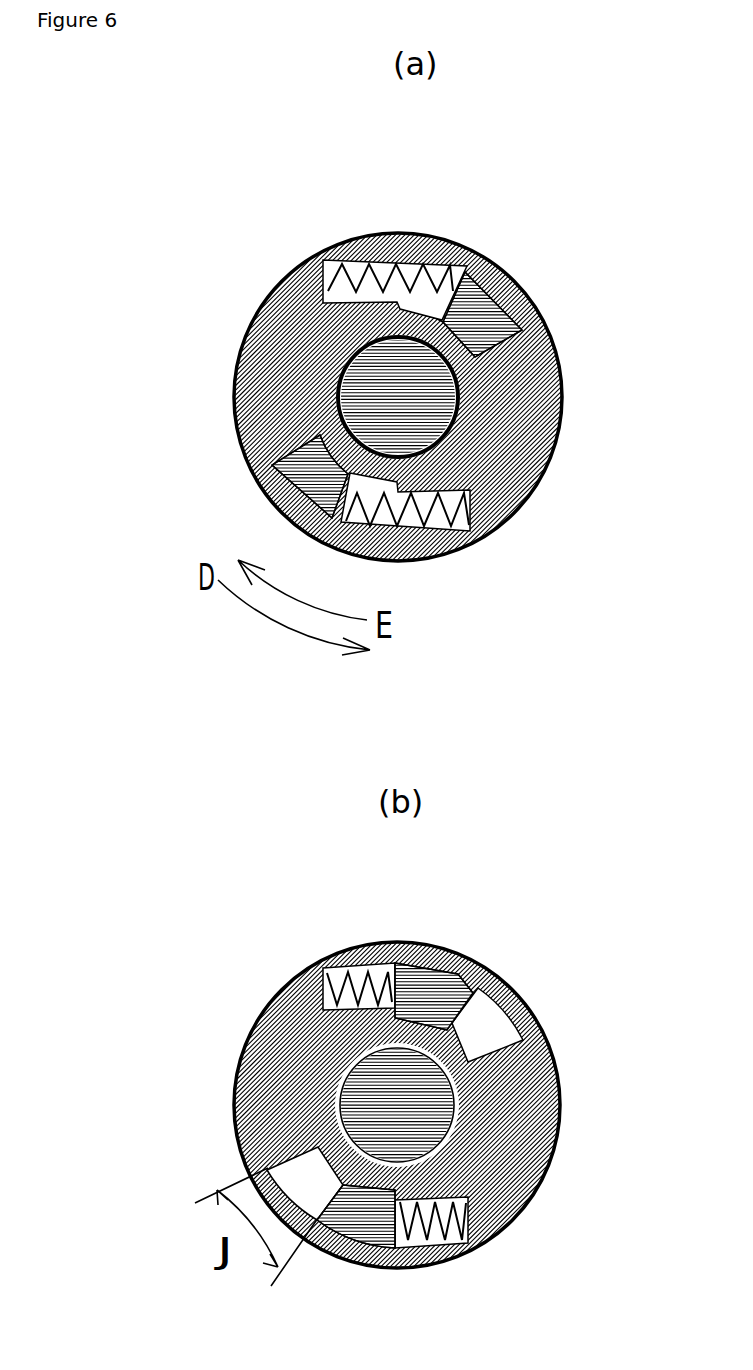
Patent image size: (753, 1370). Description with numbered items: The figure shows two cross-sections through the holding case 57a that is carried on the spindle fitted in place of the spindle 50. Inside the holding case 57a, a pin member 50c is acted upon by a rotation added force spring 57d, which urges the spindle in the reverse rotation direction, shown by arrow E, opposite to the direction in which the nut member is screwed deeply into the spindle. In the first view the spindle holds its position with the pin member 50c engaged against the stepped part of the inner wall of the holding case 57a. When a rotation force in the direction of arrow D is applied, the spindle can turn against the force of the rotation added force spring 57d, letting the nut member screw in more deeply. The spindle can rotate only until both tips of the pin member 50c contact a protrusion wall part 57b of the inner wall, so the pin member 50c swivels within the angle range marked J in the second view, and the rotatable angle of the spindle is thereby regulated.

The holding case 57a is at (536, 178).
The protrusion wall part 57b is at (388, 540).
The rotation added force spring 57d is at (367, 275).
The spindle 50 is at (367, 367).
The pin member 50c is at (485, 325).